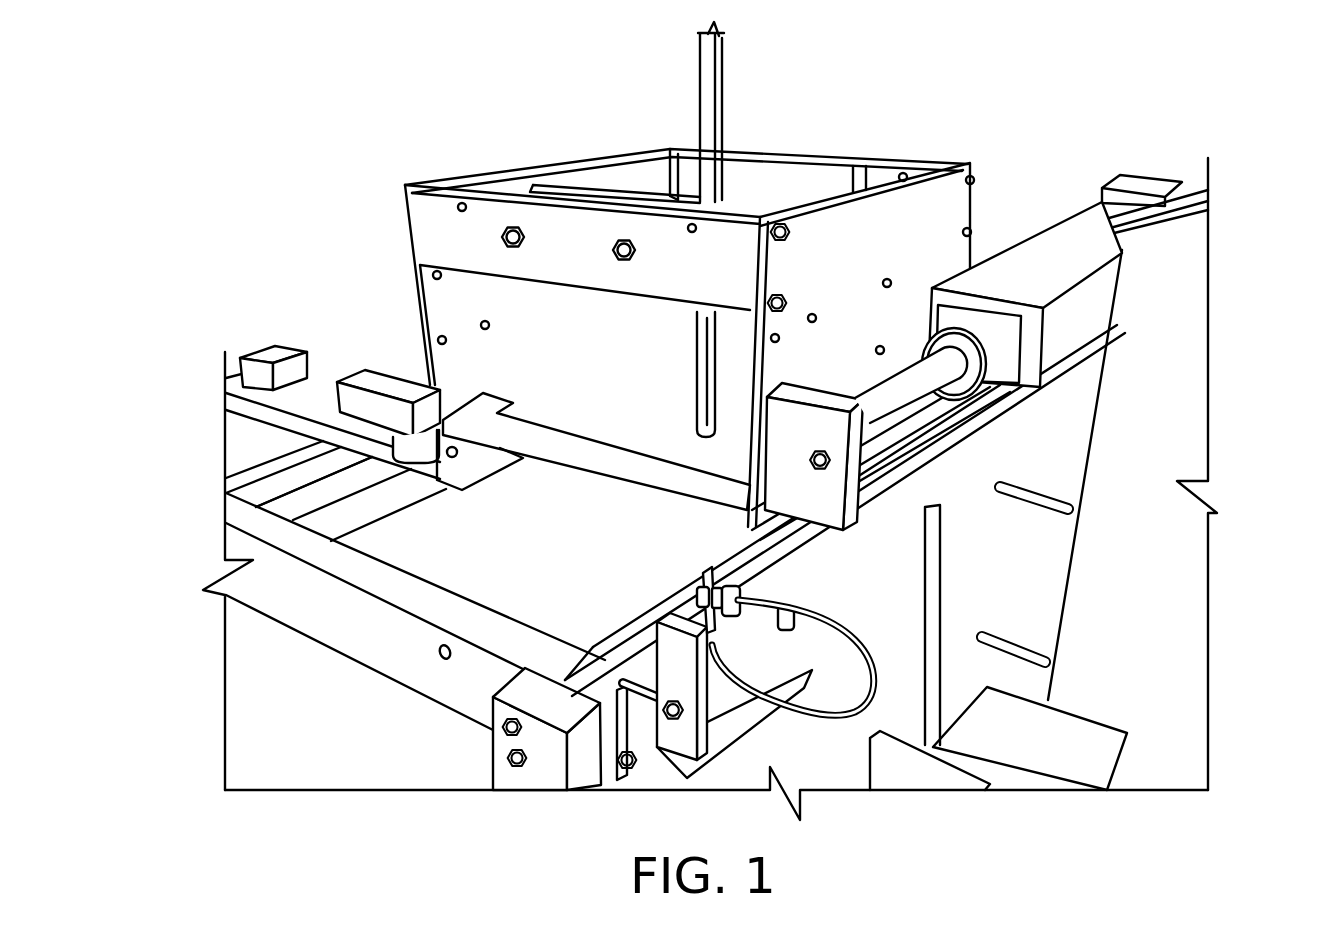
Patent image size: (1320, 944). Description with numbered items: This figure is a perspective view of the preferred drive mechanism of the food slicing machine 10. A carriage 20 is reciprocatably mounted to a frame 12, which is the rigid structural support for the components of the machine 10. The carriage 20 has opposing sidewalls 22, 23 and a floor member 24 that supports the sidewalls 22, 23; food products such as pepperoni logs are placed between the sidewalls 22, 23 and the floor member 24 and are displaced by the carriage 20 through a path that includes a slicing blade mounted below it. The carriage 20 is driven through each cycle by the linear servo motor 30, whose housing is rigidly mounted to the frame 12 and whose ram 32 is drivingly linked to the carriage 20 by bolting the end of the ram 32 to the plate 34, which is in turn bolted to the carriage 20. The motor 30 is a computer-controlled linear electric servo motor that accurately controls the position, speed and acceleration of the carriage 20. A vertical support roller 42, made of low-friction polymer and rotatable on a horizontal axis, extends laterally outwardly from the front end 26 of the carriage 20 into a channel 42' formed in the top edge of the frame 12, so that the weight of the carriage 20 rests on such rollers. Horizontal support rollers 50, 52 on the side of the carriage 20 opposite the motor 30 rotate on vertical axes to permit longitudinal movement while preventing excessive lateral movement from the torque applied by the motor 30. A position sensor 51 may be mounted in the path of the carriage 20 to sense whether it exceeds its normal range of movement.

The food slicing machine 10 is at (938, 102).
The frame 12 is at (864, 826).
The carriage 20 is at (555, 232).
The sidewall 22 is at (851, 268).
The sidewall 23 is at (612, 178).
The floor member 24 is at (573, 463).
The front end 26 is at (718, 286).
The linear servo motor 30 is at (1053, 238).
The ram 32 is at (913, 392).
The plate 34 is at (830, 423).
The vertical support roller 42 is at (355, 548).
The channel 42' is at (245, 449).
The horizontal support roller 50 is at (408, 448).
The position sensor 51 is at (705, 596).
The horizontal support roller 52 is at (350, 420).